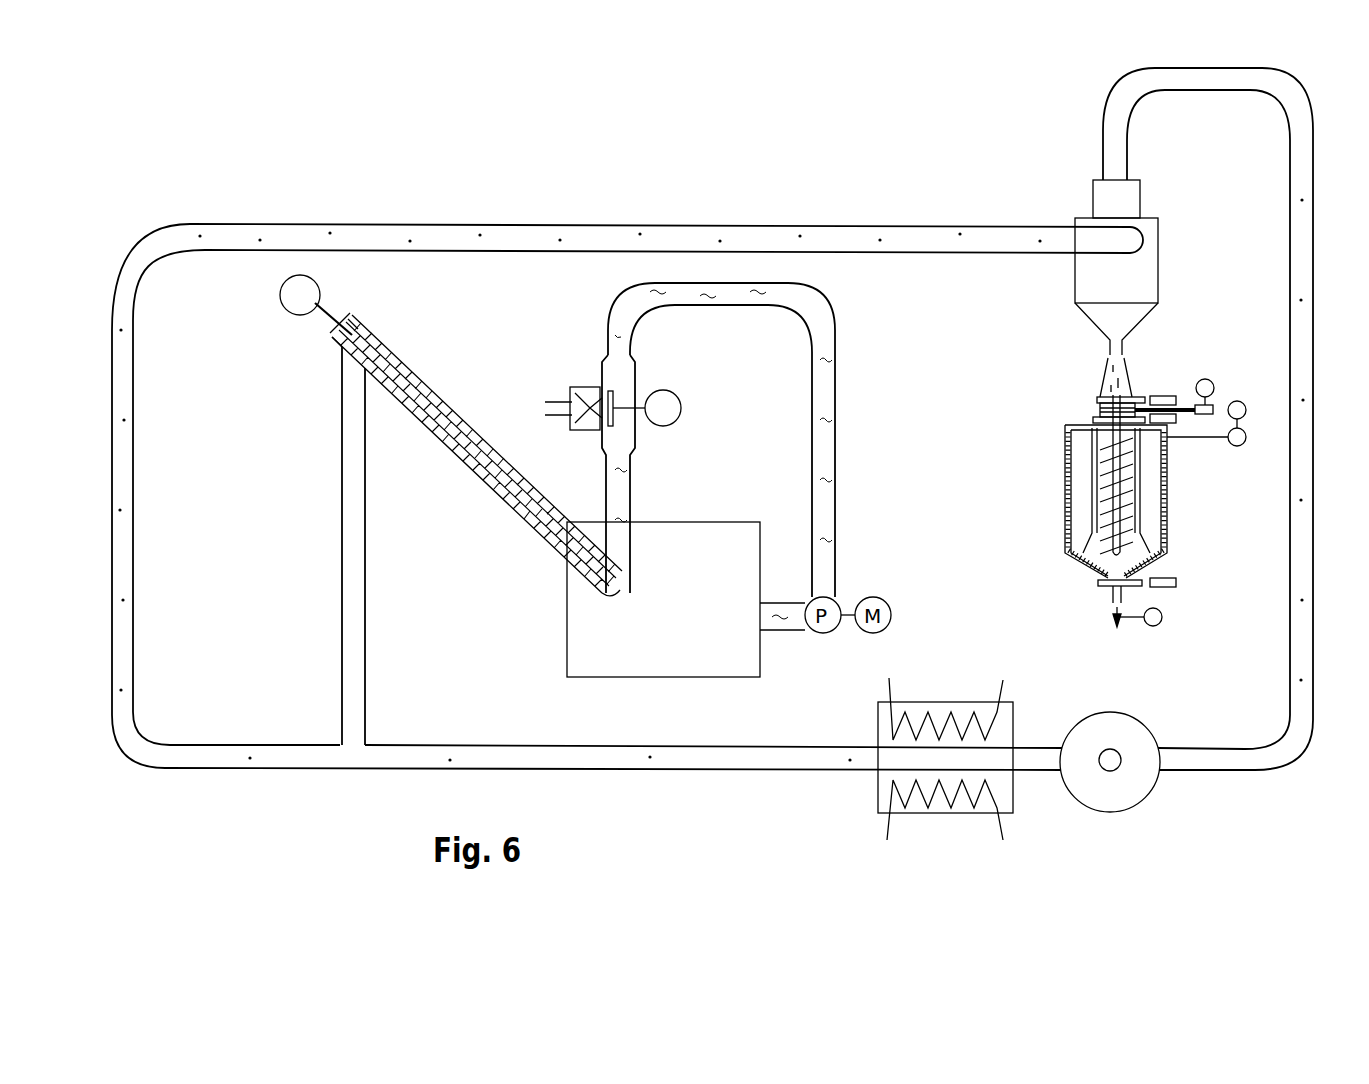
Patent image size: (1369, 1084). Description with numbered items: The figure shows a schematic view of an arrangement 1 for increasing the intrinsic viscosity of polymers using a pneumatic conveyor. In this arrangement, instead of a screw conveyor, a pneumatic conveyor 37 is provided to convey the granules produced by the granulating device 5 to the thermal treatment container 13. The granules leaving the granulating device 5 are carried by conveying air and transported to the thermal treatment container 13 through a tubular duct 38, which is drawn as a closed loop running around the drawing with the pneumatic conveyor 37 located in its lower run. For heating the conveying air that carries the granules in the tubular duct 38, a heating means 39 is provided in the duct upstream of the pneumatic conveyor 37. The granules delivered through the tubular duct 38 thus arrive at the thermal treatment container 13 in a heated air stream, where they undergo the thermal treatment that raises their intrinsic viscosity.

The apparatus feed conveyor 1 is at (540, 392).
The granulating device 5 is at (582, 378).
The thermal treatment container 13 is at (1180, 510).
The pneumatic conveyor 37 is at (1143, 711).
The tubular duct 38 is at (1308, 641).
The heating means 39 is at (963, 700).